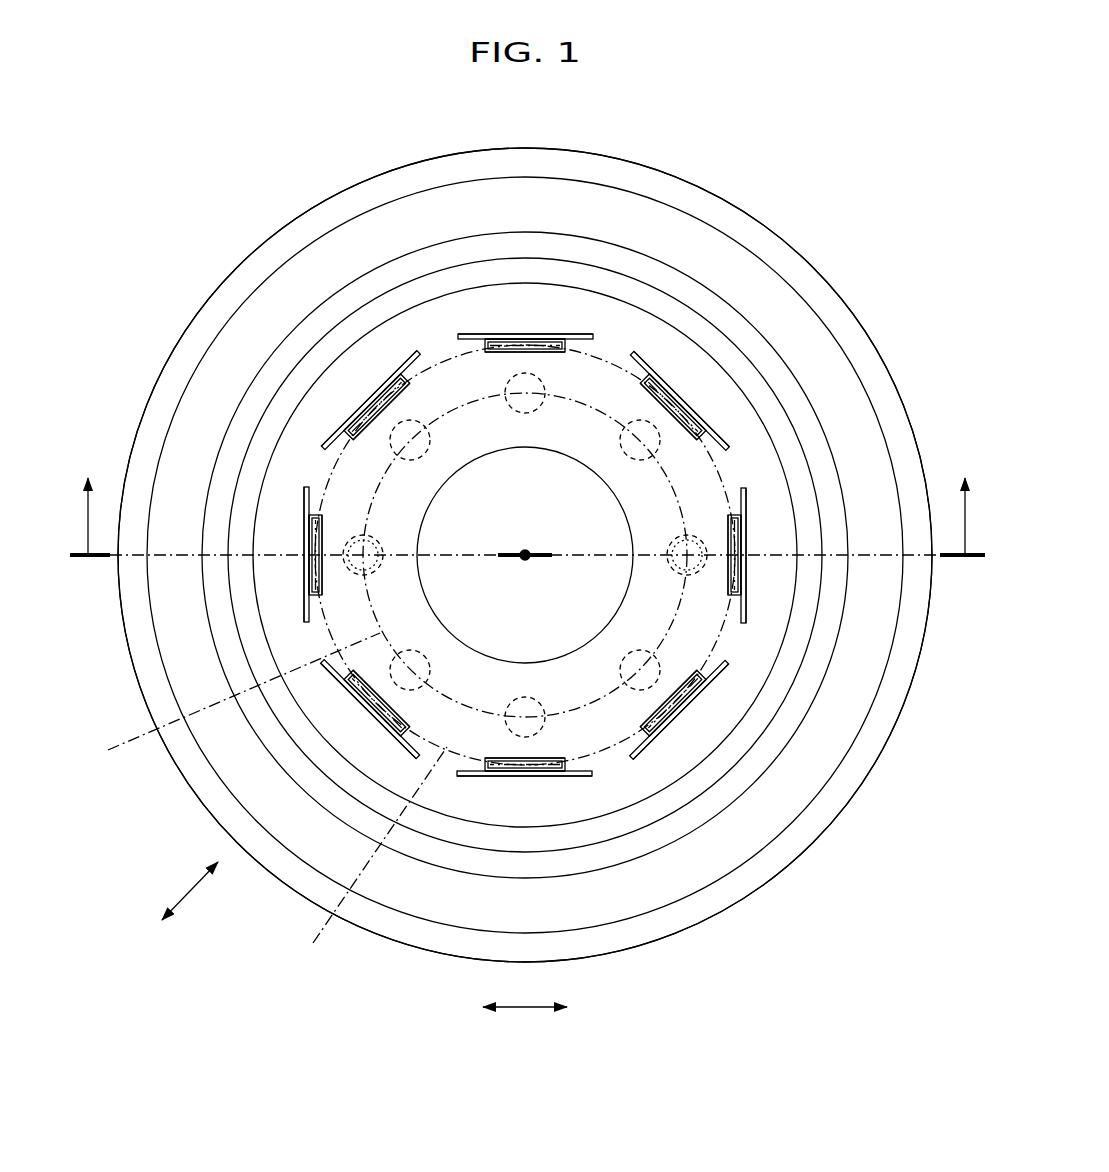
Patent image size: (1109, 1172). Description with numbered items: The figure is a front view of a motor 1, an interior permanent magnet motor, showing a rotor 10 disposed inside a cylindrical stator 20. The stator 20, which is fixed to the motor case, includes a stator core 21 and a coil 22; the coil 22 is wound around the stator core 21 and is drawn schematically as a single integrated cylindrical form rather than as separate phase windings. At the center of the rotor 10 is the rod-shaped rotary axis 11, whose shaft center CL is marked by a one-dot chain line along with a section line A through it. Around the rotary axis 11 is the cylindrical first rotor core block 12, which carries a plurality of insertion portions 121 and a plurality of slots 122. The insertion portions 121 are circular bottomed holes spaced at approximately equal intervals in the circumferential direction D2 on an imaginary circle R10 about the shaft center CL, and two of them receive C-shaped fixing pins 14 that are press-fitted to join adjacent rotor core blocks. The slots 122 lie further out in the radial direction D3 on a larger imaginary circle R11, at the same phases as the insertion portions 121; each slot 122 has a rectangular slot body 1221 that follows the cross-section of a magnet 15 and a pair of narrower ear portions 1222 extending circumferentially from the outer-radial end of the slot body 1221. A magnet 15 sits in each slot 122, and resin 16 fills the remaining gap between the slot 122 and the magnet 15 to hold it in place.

The motor 1 is at (724, 128).
The rotor 10 is at (622, 296).
The rotary axis 11 is at (541, 461).
The first rotor core block 12 is at (512, 326).
The insertion portion 121 is at (500, 386).
The slot 122 is at (568, 335).
The slot body 1221 is at (486, 338).
The ear portion 1222 is at (462, 340).
The fixing pin 14 is at (677, 540).
The magnet 15 is at (497, 335).
The resin 16 is at (458, 336).
The stator 20 is at (736, 196).
The stator core 21 is at (622, 175).
The coil 22 is at (512, 224).
The shaft center CL is at (520, 558).
The section line A- A is at (527, 496).
The imaginary circle R10 is at (229, 710).
The imaginary circle R11 is at (375, 858).
The circumferential direction D2 is at (525, 990).
The radial direction D3 is at (196, 895).